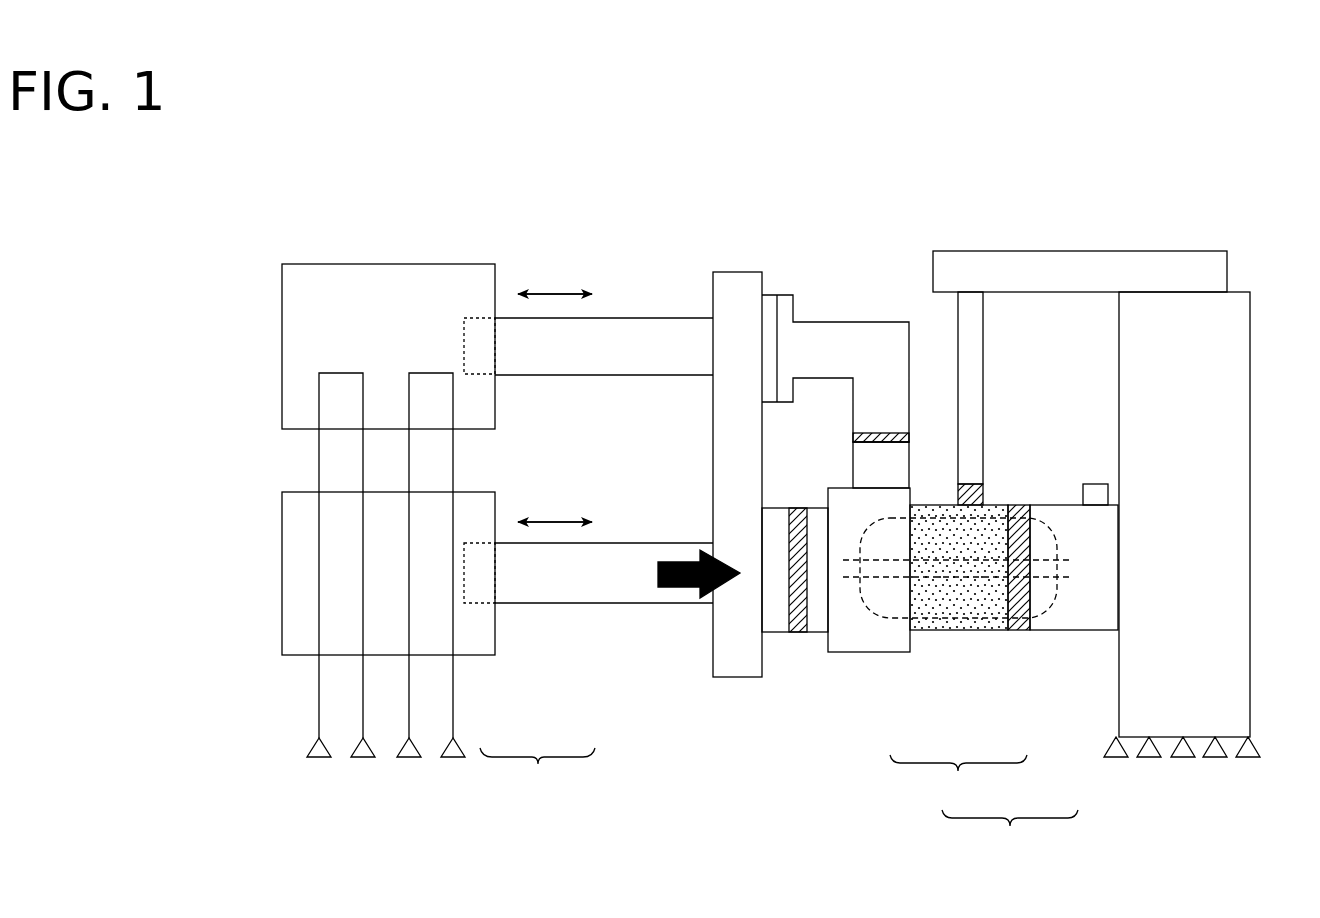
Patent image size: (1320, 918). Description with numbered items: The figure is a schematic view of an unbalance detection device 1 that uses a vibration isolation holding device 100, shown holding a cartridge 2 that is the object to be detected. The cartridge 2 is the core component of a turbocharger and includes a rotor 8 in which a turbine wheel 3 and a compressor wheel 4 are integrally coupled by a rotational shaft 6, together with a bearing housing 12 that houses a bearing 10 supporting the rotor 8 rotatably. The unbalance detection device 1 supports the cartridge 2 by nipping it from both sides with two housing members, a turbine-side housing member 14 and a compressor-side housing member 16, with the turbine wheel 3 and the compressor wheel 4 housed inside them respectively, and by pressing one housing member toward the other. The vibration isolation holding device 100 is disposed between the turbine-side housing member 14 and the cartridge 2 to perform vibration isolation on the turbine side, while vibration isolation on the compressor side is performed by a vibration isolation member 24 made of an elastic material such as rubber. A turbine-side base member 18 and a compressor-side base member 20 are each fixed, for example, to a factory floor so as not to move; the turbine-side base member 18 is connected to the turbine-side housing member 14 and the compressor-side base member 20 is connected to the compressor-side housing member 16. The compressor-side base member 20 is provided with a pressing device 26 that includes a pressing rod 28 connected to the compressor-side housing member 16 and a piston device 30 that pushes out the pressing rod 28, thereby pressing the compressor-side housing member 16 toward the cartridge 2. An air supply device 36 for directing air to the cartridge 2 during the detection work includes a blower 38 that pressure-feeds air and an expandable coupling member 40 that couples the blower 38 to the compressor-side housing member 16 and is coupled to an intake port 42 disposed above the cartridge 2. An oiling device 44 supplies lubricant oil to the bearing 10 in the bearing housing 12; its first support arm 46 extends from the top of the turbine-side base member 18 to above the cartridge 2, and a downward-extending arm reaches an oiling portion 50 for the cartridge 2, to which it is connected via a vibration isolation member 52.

The unbalance detection device 1 is at (1267, 190).
The cartridge 2 is at (1010, 835).
The turbine wheel 3 is at (1057, 632).
The compressor wheel 4 is at (888, 625).
The rotational shaft 6 is at (943, 632).
The rotor 8 is at (958, 785).
The bearing 10 is at (971, 632).
The bearing housing 12 is at (1000, 632).
The turbine-side housing member 14 is at (1097, 632).
The compressor-side housing member 16 is at (862, 655).
The turbine-side base member 18 is at (1250, 540).
The compressor-side base member 20 is at (318, 718).
The vibration isolation member 24 is at (848, 437).
The pressing device 26 is at (537, 774).
The pressing rod 28 is at (598, 605).
The piston device 30 is at (495, 655).
The air supply device 36 is at (569, 192).
The blower 38 is at (392, 264).
The coupling member 40 is at (836, 322).
The intake port 42 is at (870, 455).
The oiling device 44 is at (1142, 245).
The first support arm 46 is at (1082, 251).
The oiling portion 50 is at (950, 505).
The vibration isolation member 52 is at (957, 497).
The vibration isolation holding device 100 is at (1021, 503).